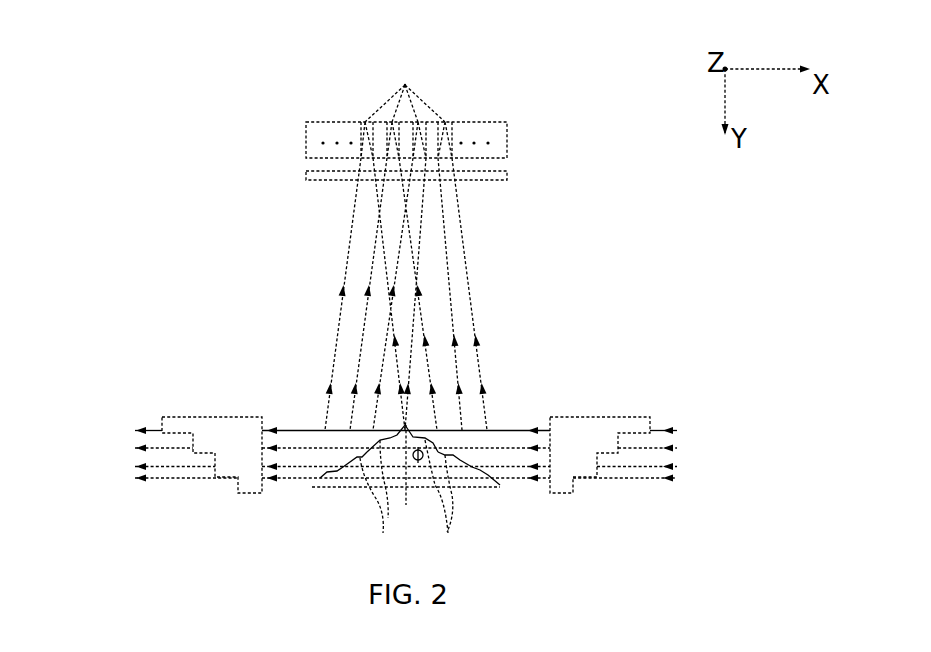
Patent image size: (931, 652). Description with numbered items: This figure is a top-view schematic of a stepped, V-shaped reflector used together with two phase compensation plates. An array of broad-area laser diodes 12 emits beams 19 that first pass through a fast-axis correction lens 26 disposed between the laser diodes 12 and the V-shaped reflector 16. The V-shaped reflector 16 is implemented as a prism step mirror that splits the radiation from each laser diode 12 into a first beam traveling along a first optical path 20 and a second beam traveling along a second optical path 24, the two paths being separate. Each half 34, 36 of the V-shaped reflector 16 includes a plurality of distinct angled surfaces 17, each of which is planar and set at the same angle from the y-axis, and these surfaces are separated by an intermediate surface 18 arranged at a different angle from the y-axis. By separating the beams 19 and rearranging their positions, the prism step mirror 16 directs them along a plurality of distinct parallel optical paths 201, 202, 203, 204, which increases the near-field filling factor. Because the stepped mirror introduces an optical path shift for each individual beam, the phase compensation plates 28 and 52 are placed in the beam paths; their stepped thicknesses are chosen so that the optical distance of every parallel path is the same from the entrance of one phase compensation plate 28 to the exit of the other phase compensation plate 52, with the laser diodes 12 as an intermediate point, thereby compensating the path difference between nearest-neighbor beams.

The laser diodes 12 is at (405, 86).
The fast-axis correction lens 26 is at (507, 176).
The beams 19 is at (360, 340).
The phase compensation plate 52 is at (178, 417).
The second optical path 24 is at (142, 428).
The phase compensation plate 28 is at (595, 417).
The first optical path 20 is at (671, 429).
The parallel optical path 201 is at (677, 428).
The parallel optical path 202 is at (680, 447).
The parallel optical path 203 is at (677, 466).
The parallel optical path 204 is at (683, 477).
The V-shaped reflector 16 is at (402, 479).
The half of the V-shaped reflector 36 is at (311, 487).
The half of the V-shaped reflector 34 is at (500, 485).
The intermediate surface 18 is at (376, 501).
The distinct angled surfaces 17 is at (441, 501).